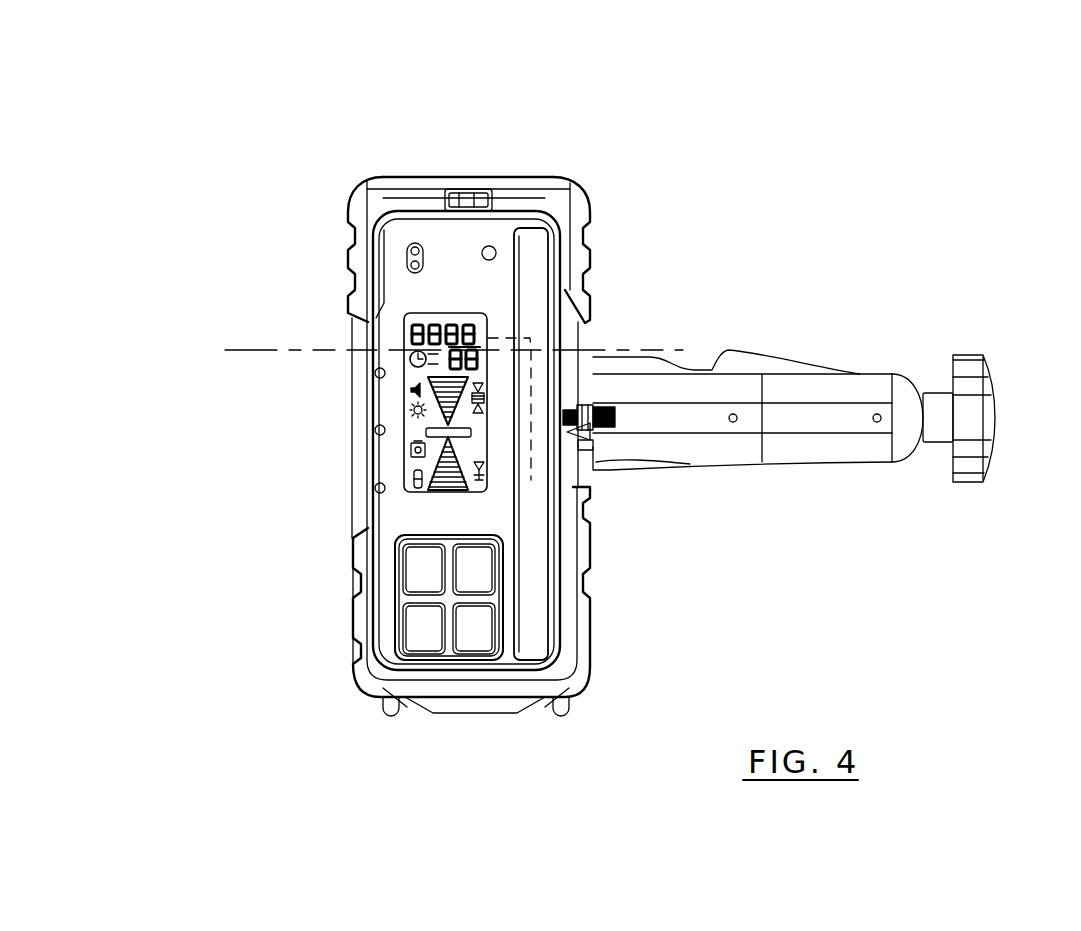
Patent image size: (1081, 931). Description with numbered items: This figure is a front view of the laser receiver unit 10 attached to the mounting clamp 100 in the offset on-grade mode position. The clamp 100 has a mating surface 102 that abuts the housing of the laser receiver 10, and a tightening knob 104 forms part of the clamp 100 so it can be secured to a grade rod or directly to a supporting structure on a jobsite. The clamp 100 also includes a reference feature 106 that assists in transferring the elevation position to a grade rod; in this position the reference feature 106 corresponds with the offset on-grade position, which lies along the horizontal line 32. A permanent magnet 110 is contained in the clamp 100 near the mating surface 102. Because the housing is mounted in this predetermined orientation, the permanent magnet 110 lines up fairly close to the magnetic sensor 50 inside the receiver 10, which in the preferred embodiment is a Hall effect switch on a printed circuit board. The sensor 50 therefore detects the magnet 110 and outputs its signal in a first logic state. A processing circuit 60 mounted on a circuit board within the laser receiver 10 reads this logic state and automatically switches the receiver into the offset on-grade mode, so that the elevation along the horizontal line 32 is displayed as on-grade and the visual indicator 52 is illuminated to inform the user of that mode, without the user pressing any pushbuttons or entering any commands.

The laser receiver unit 10 is at (469, 446).
The horizontal line 32 is at (238, 352).
The magnetic sensor 50 is at (570, 402).
The visual indicator 52 is at (485, 466).
The processing circuit 60 is at (528, 482).
The mounting clamp 100 is at (860, 356).
The mating surface 102 is at (623, 461).
The tightening knob 104 is at (973, 417).
The reference feature 106 is at (728, 347).
The permanent magnet 110 is at (618, 410).